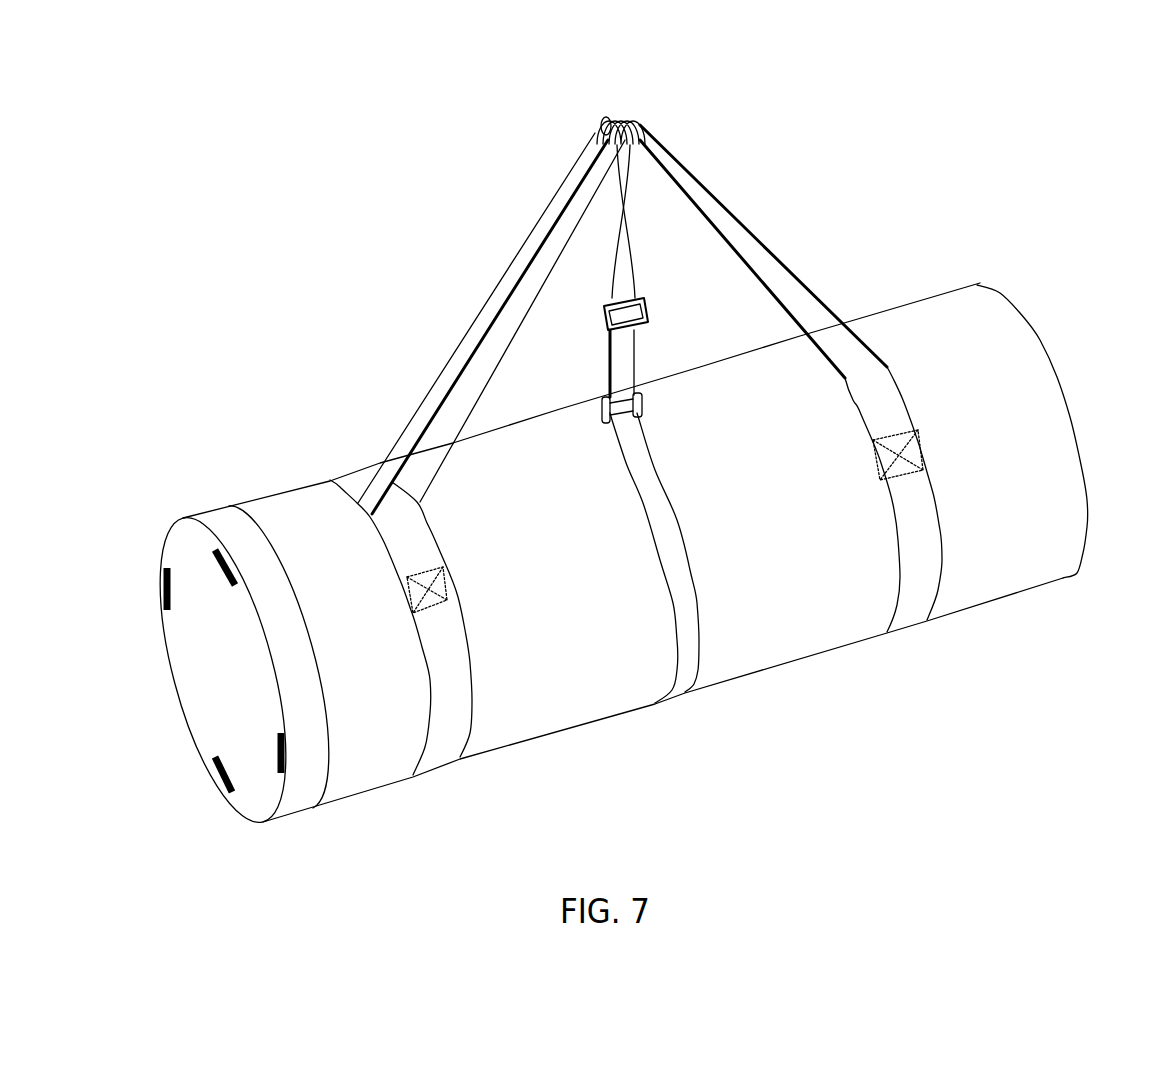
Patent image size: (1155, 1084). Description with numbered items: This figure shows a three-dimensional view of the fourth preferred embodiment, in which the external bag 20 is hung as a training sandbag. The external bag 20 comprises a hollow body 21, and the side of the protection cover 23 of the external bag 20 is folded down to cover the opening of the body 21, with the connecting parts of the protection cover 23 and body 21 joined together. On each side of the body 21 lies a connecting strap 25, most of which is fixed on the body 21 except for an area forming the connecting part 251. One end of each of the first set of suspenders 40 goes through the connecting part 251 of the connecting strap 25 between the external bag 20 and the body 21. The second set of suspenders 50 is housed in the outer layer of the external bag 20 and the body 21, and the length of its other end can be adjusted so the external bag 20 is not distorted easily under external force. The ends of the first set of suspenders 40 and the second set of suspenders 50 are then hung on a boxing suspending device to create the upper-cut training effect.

The external bag 20 is at (623, 485).
The body 21 is at (362, 797).
The protection cover 23 is at (207, 717).
The connection strap 25 is at (629, 516).
The connecting part 251 is at (383, 529).
The first suspender set 40 is at (547, 227).
The second suspender set 50 is at (690, 648).